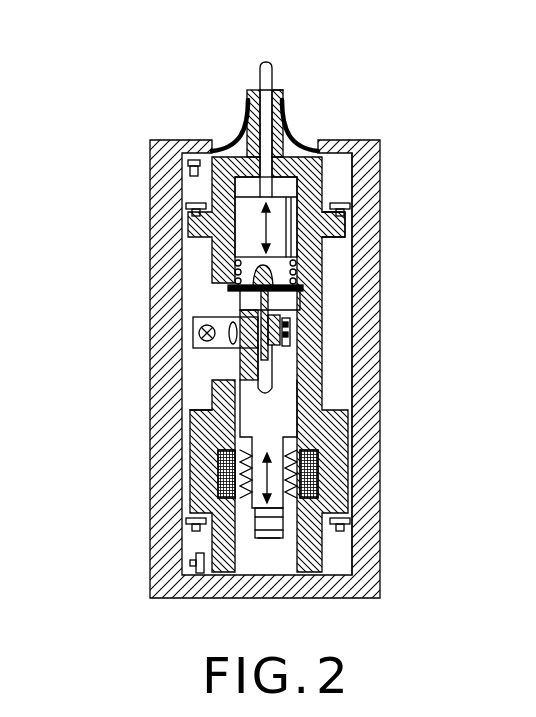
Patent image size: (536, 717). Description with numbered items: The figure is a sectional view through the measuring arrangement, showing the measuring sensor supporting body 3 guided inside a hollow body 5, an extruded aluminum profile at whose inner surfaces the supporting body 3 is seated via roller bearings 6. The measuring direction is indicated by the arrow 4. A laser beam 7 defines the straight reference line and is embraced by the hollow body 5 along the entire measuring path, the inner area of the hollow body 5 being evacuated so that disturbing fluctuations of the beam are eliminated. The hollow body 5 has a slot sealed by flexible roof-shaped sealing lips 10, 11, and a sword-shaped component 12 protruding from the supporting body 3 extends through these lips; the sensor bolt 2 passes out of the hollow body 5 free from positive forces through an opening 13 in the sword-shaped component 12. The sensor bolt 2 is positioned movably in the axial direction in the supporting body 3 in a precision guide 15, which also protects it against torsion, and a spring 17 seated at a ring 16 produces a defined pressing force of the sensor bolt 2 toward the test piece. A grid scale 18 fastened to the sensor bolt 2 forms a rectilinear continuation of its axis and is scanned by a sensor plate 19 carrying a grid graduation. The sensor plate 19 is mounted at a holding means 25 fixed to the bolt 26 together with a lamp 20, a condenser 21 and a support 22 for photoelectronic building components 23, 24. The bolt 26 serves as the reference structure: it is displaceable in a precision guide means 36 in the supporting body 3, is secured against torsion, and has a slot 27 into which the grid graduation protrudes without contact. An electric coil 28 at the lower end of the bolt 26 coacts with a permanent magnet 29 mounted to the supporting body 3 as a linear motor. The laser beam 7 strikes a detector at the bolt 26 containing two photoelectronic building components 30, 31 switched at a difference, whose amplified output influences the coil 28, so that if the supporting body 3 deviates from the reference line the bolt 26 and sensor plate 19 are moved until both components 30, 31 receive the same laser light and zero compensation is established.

The sensor bolt 2 is at (258, 70).
The measuring sensor supporting body 3 is at (305, 310).
The arrow 4 is at (325, 252).
The hollow body 5 is at (355, 545).
The roller bearings 6 is at (185, 168).
The laser beam 7 is at (264, 538).
The sealing lip 10 is at (243, 140).
The sealing lip 11 is at (318, 133).
The sword-shaped component 12 is at (280, 88).
The opening 13 is at (356, 168).
The precision guide 15 is at (345, 220).
The ring 16 is at (228, 289).
The spring 17 is at (300, 268).
The grid scale 18 is at (195, 333).
The sensor plate 19 is at (305, 420).
The lamp 20 is at (207, 349).
The condenser 21 is at (222, 362).
The support 22 is at (272, 355).
The photoelectronic building component 23 is at (290, 340).
The photoelectronic building component 24 is at (300, 385).
The holding means 25 is at (223, 355).
The bolt 26 is at (315, 468).
The slot 27 is at (252, 388).
The electric coil 28 is at (258, 538).
The permanent magnet 29 is at (240, 485).
The photoelectronic building component 30 is at (272, 522).
The photoelectronic building component 31 is at (280, 517).
The precision guide means 36 is at (200, 412).